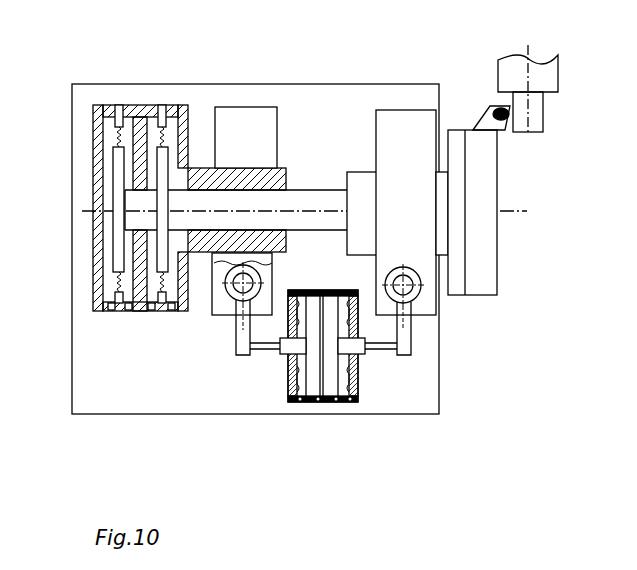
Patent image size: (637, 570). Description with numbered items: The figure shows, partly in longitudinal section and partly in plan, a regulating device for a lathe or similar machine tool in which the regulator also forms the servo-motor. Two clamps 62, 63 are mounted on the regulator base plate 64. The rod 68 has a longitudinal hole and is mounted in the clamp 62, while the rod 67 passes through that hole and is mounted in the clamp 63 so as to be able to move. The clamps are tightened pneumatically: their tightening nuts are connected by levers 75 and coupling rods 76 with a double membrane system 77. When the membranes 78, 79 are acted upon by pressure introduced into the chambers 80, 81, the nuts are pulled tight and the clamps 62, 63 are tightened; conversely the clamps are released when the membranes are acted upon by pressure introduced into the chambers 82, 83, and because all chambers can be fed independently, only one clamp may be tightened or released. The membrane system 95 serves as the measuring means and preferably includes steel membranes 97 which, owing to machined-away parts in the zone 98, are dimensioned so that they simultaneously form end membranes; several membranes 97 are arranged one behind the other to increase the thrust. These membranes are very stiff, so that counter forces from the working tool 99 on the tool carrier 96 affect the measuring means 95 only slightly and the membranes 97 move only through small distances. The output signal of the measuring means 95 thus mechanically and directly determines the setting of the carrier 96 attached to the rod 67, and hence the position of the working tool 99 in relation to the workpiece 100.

The clamp 62 is at (257, 91).
The clamp 63 is at (370, 88).
The regulator base plate 64 is at (98, 354).
The rod 67 is at (200, 211).
The rod 68 is at (187, 250).
The lever 75 is at (245, 320).
The coupling rod 76 is at (268, 347).
The double membrane system 77 is at (377, 408).
The membrane 78 is at (305, 375).
The membrane 79 is at (345, 312).
The chamber 80 is at (298, 365).
The chamber 81 is at (350, 348).
The chamber 82 is at (313, 377).
The chamber 83 is at (347, 302).
The membrane system 95 is at (149, 80).
The tool carrier 96 is at (482, 268).
The steel membranes 97 is at (118, 182).
The zone 98 is at (118, 135).
The working tool 99 is at (501, 128).
The workpiece 100 is at (527, 87).